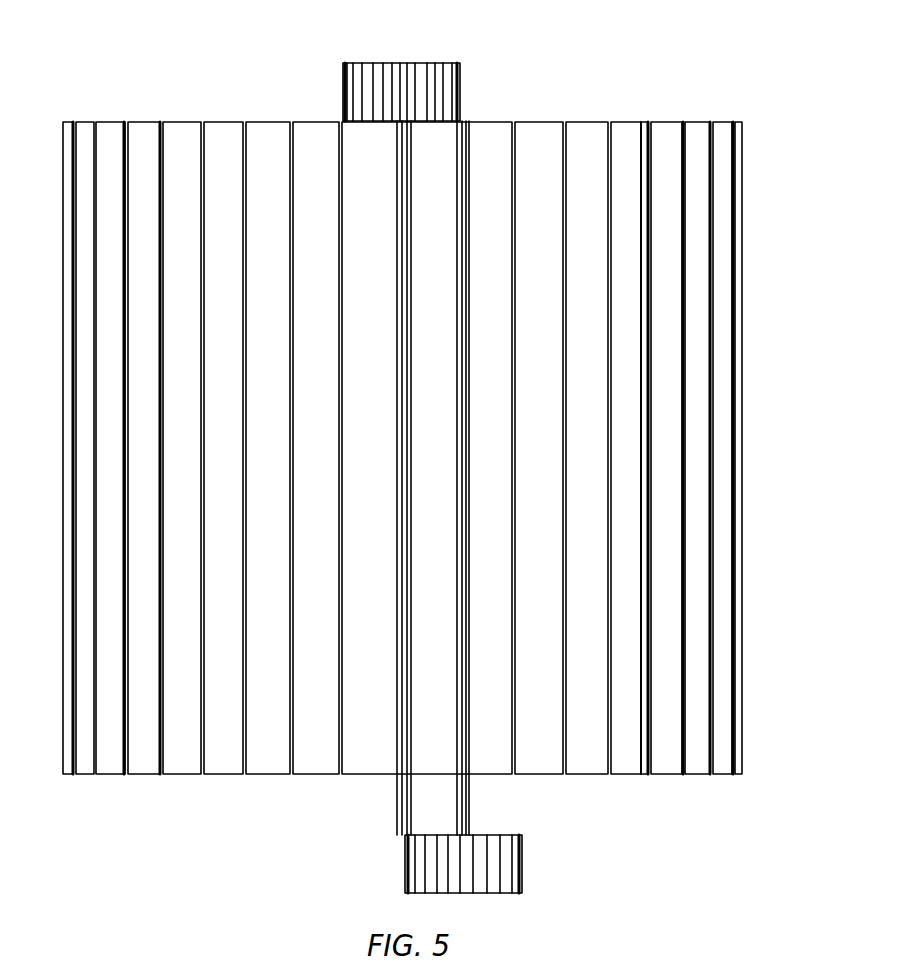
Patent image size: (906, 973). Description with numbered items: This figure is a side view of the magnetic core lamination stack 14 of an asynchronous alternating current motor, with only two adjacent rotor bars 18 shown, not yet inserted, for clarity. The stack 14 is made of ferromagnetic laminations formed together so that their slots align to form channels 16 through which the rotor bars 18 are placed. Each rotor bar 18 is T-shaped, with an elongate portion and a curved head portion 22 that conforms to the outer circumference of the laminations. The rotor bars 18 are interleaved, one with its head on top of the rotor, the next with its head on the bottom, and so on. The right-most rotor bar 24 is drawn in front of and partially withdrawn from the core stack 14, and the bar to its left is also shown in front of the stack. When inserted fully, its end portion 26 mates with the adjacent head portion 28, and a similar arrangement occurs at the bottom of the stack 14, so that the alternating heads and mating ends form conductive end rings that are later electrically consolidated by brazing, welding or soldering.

The stack 14 is at (742, 312).
The channels 16 is at (650, 745).
The rotor bar 18 is at (400, 808).
The head portion 22 is at (461, 75).
The right-most rotor bar 24 is at (470, 810).
The end portion 26 is at (467, 163).
The head portion 28 is at (461, 73).